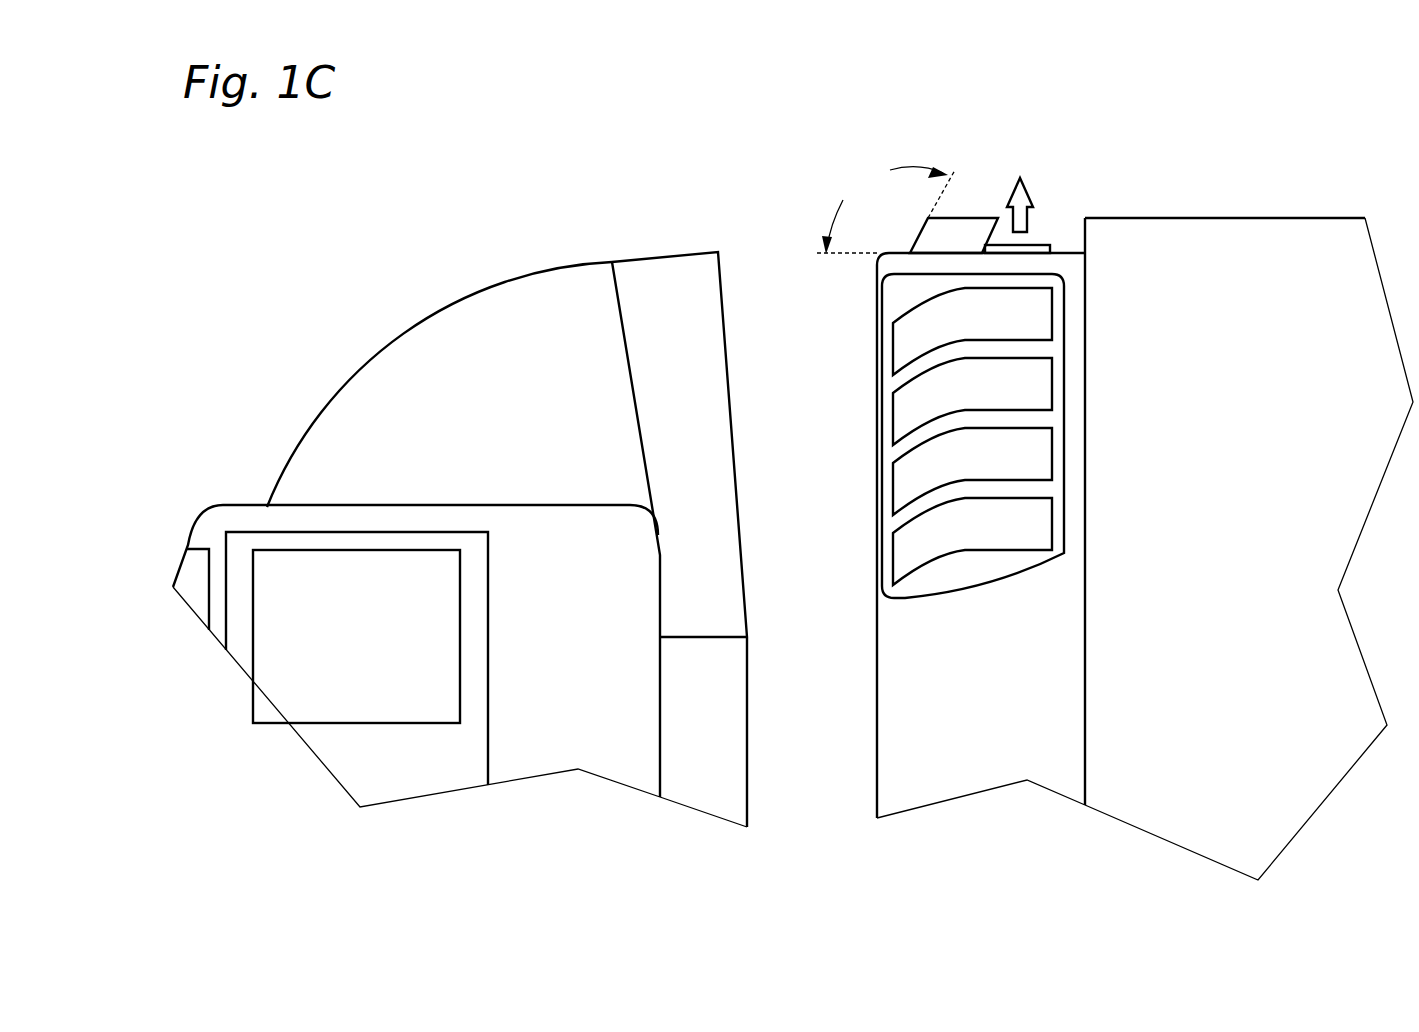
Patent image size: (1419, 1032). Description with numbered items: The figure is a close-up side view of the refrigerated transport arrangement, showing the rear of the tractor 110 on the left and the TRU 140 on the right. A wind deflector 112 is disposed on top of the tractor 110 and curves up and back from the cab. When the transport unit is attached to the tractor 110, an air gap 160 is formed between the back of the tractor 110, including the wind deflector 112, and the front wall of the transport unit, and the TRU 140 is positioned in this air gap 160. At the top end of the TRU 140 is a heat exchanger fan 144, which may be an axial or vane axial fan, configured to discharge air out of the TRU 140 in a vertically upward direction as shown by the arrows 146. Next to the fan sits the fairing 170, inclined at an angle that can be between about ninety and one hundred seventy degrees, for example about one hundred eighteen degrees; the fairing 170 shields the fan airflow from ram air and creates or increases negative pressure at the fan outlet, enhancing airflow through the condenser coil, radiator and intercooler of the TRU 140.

The tractor 110 is at (257, 505).
The wind deflector 112 is at (462, 300).
The TRU 140 is at (877, 672).
The heat exchanger fan 144 is at (1038, 243).
The arrows 146 is at (1038, 192).
The air gap 160 is at (783, 300).
The fairing 170 is at (980, 217).